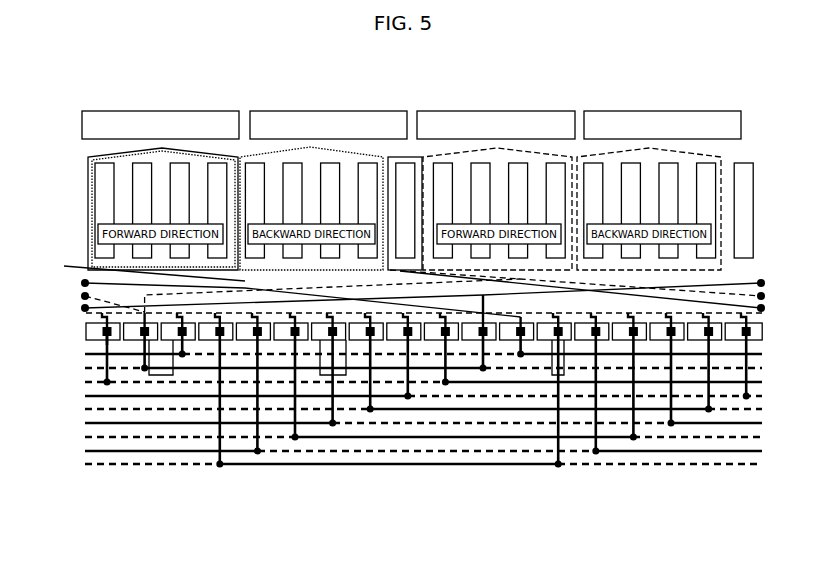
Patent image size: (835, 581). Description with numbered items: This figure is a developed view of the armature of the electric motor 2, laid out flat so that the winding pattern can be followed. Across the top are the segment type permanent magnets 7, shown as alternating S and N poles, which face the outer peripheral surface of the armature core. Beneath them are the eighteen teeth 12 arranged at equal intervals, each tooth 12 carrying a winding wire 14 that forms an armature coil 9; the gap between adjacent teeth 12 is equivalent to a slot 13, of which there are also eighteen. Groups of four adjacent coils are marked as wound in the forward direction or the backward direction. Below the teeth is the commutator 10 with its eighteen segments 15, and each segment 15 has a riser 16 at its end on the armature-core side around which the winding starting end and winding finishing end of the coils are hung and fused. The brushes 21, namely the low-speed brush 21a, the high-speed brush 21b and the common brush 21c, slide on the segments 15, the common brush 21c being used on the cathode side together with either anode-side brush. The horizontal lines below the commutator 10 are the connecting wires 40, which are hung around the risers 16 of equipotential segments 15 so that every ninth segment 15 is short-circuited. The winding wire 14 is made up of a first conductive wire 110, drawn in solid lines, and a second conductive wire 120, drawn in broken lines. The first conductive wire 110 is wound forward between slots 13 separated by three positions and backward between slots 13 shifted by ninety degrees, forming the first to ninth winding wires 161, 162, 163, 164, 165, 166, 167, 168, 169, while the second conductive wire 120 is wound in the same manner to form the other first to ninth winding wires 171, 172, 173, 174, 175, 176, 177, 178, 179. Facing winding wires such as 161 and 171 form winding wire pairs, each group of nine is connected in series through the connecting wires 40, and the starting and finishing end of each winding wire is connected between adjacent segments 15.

The linear motor 2 is at (411, 88).
The permanent magnet 7 is at (258, 110).
The armature coil 9 is at (363, 142).
The commutator 10 is at (775, 327).
The tooth 12 is at (98, 178).
The slot 13 is at (122, 173).
The winding wire 14 is at (80, 218).
The segment 15 is at (762, 336).
The riser 16 is at (104, 338).
The brush 21 is at (346, 444).
The low-speed brush 21a is at (160, 376).
The high-speed brush 21b is at (558, 376).
The common brush 21c is at (340, 376).
The connecting wire 40 is at (778, 400).
The first conductive wire 110 is at (414, 291).
The second conductive wire 120 is at (423, 291).
The first winding wire 161 is at (525, 320).
The second winding wire 162 is at (107, 312).
The third winding wire 163 is at (450, 320).
The fourth winding wire 164 is at (750, 320).
The fifth winding wire 165 is at (372, 320).
The sixth winding wire 166 is at (675, 320).
The seventh winding wire 167 is at (262, 320).
The eighth winding wire 168 is at (600, 320).
The ninth winding wire 169 is at (187, 320).
The other first winding wire 171 is at (482, 150).
The other second winding wire 172 is at (488, 320).
The other third winding wire 173 is at (82, 310).
The other fourth winding wire 174 is at (412, 320).
The other fifth winding wire 175 is at (712, 320).
The other sixth winding wire 176 is at (300, 320).
The other seventh winding wire 177 is at (637, 320).
The other eighth winding wire 178 is at (224, 320).
The other ninth winding wire 179 is at (562, 320).